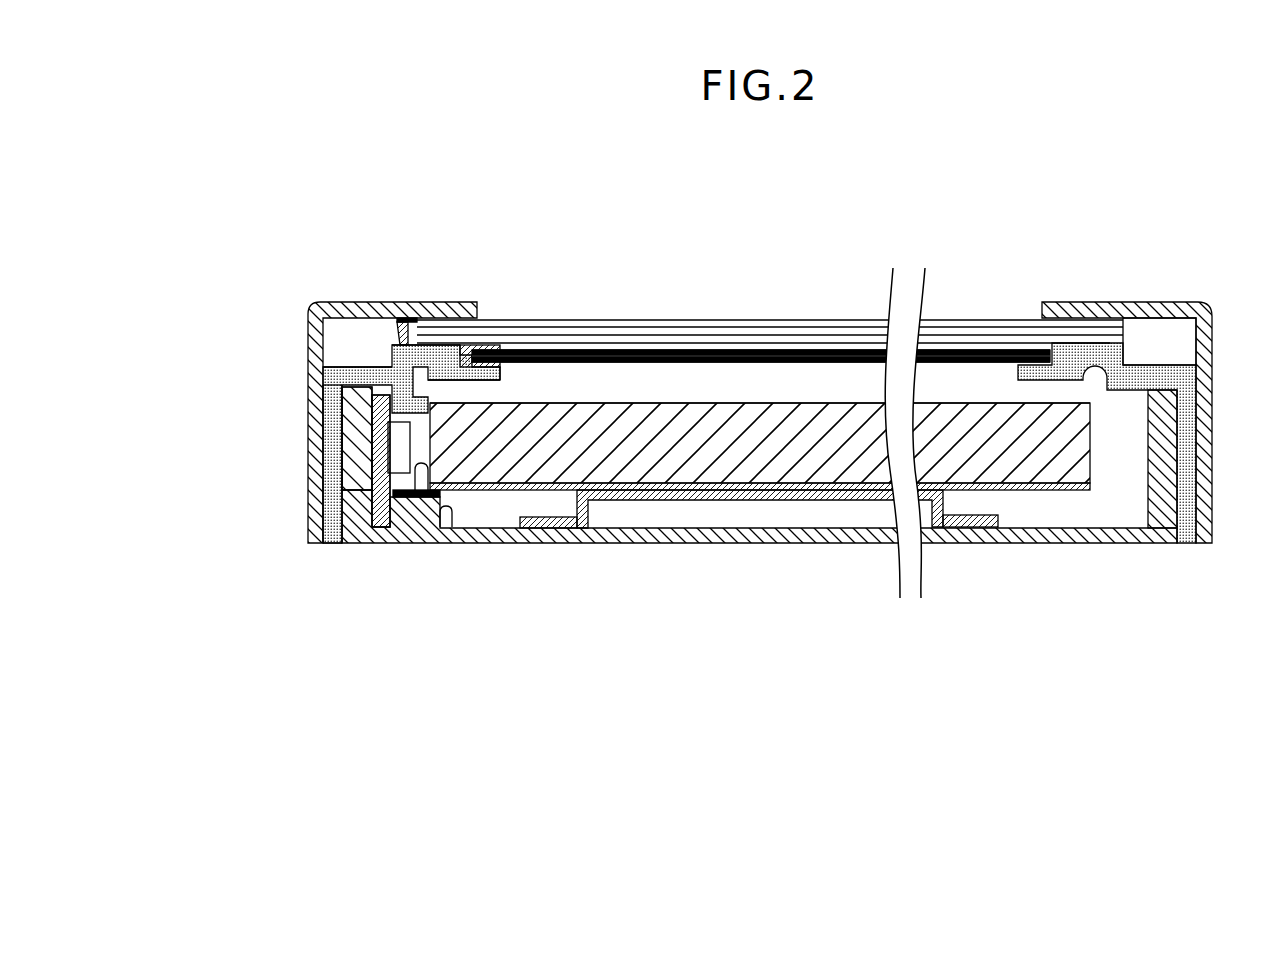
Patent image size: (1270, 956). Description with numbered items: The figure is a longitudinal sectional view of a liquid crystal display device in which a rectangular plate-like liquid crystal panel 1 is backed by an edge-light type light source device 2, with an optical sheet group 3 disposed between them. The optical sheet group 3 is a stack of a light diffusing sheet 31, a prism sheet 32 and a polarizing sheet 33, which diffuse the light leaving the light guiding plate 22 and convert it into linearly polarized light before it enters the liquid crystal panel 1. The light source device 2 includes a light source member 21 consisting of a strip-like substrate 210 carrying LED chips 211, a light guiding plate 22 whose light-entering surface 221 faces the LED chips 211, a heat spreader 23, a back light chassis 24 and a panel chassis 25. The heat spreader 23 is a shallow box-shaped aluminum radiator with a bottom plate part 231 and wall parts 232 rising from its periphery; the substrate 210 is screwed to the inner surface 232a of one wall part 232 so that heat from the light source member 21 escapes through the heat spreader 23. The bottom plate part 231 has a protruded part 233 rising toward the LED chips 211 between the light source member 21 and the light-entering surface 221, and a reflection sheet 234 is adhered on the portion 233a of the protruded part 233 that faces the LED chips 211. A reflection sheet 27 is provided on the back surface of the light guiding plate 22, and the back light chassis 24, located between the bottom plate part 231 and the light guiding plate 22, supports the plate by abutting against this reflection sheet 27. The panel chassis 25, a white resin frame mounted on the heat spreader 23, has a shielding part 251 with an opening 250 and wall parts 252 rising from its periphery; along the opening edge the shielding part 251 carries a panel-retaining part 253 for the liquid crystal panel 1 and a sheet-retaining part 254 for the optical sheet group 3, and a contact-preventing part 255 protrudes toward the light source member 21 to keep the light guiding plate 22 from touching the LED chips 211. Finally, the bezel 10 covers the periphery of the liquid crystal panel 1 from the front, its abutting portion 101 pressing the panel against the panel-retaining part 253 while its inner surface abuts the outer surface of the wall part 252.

The liquid crystal panel 1 is at (768, 320).
The light source device 2 is at (670, 382).
The optical sheet group 3 is at (1020, 202).
The bezel 10 is at (357, 302).
The abutting portion 101 is at (455, 320).
The light source member 21 is at (222, 402).
The substrate 210 is at (350, 420).
The LED chip 211 is at (393, 450).
The light guiding plate 22 is at (820, 403).
The light-entering surface 221 is at (423, 470).
The heat spreader 23 is at (641, 566).
The bottom plate part 231 is at (558, 538).
The wall part 232 is at (327, 482).
The inner surface 232a is at (322, 372).
The protruded part 233 is at (447, 528).
The portion facing the LED chip 233a is at (323, 537).
The reflection sheet 234 is at (340, 507).
The back light chassis 24 is at (768, 502).
The panel chassis 25 is at (352, 353).
The opening 250 is at (498, 386).
The shielding part 251 is at (580, 350).
The wall part 252 is at (327, 397).
The panel-retaining part 253 is at (438, 346).
The sheet-retaining part 254 is at (474, 350).
The contact-preventing part 255 is at (412, 343).
The reflection sheet 27 is at (1052, 490).
The light diffusing sheet 31 is at (970, 350).
The prism sheet 32 is at (960, 350).
The polarizing sheet 33 is at (953, 350).